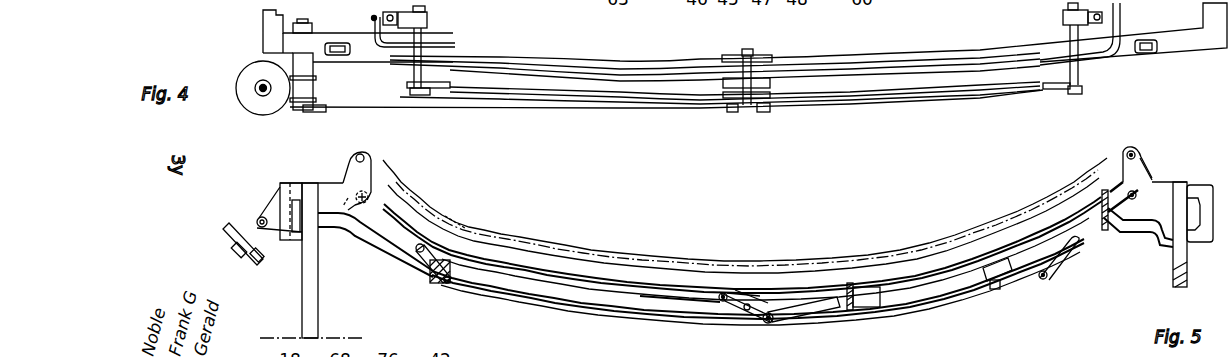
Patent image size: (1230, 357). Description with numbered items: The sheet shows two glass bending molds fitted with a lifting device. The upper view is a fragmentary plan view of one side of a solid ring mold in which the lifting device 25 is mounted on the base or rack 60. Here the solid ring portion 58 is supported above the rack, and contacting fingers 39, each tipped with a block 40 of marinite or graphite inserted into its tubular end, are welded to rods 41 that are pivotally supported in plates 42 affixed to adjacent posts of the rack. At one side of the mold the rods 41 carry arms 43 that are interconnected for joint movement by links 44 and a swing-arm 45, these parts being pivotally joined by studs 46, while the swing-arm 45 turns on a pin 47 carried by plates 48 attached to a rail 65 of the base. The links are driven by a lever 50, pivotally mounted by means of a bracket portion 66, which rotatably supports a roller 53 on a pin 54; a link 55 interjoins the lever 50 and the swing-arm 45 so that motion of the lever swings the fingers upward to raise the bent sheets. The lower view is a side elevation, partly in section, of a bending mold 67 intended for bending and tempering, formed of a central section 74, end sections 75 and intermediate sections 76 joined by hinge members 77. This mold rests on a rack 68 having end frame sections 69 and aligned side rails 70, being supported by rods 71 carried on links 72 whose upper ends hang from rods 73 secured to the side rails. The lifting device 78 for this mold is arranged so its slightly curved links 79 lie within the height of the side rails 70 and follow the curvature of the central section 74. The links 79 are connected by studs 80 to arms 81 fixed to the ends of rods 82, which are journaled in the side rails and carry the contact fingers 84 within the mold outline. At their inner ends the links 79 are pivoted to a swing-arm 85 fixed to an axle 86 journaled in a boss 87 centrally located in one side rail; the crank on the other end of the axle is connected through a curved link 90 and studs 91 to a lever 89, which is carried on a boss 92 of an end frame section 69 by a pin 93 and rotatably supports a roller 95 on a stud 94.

In FIG. 4, the lifting device 25 is at (486, 110).
In FIG. 4, the contacting fingers 39 is at (428, 17).
In FIG. 4, the block 40 is at (371, 19).
In FIG. 4, the rods 41 is at (425, 38).
In FIG. 4, the plates 42 is at (410, 66).
In FIG. 4, the arms 43 is at (432, 96).
In FIG. 4, the links 44 is at (627, 97).
In FIG. 4, the swing-arm 45 is at (748, 103).
In FIG. 4, the studs 46 is at (762, 105).
In FIG. 4, the pin 47 is at (752, 53).
In FIG. 4, the plates 48 is at (730, 82).
In FIG. 4, the lever 50 is at (313, 111).
In FIG. 4, the roller 53 is at (253, 70).
In FIG. 4, the pin 54 is at (268, 96).
In FIG. 4, the link 55 is at (537, 107).
In FIG. 4, the solid ring portion 58 is at (557, 67).
In FIG. 4, the base or rack 60 is at (925, 53).
In FIG. 4, the rail 65 is at (498, 55).
In FIG. 4, the bracket portion 66 is at (309, 63).
In FIG. 5, the bending mold 67 is at (536, 255).
In FIG. 5, the rack 68 is at (389, 265).
In FIG. 5, the end frame sections 69 is at (318, 315).
In FIG. 5, the side rails 70 is at (553, 298).
In FIG. 5, the rods 71 is at (405, 185).
In FIG. 5, the links 72 is at (393, 168).
In FIG. 5, the rods 73 is at (366, 157).
In FIG. 5, the central section 74 is at (755, 293).
In FIG. 5, the end sections 75 is at (407, 212).
In FIG. 5, the intermediate sections 76 is at (472, 250).
In FIG. 5, the hinge members 77 is at (997, 287).
In FIG. 5, the lifting device 78 is at (613, 300).
In FIG. 5, the links 79 is at (682, 302).
In FIG. 5, the studs 80 is at (422, 268).
In FIG. 5, the arms 81 is at (430, 278).
In FIG. 5, the rods 82 is at (447, 284).
In FIG. 5, the contact fingers 84 is at (453, 218).
In FIG. 5, the swing-arm 85 is at (733, 304).
In FIG. 5, the axle 86 is at (760, 322).
In FIG. 5, the boss 87 is at (767, 296).
In FIG. 5, the lever 89 is at (255, 222).
In FIG. 5, the link 90 is at (353, 236).
In FIG. 5, the studs 91 is at (262, 216).
In FIG. 5, the boss 92 is at (305, 183).
In FIG. 5, the pin 93 is at (284, 186).
In FIG. 5, the stud 94 is at (236, 254).
In FIG. 5, the roller 95 is at (259, 257).